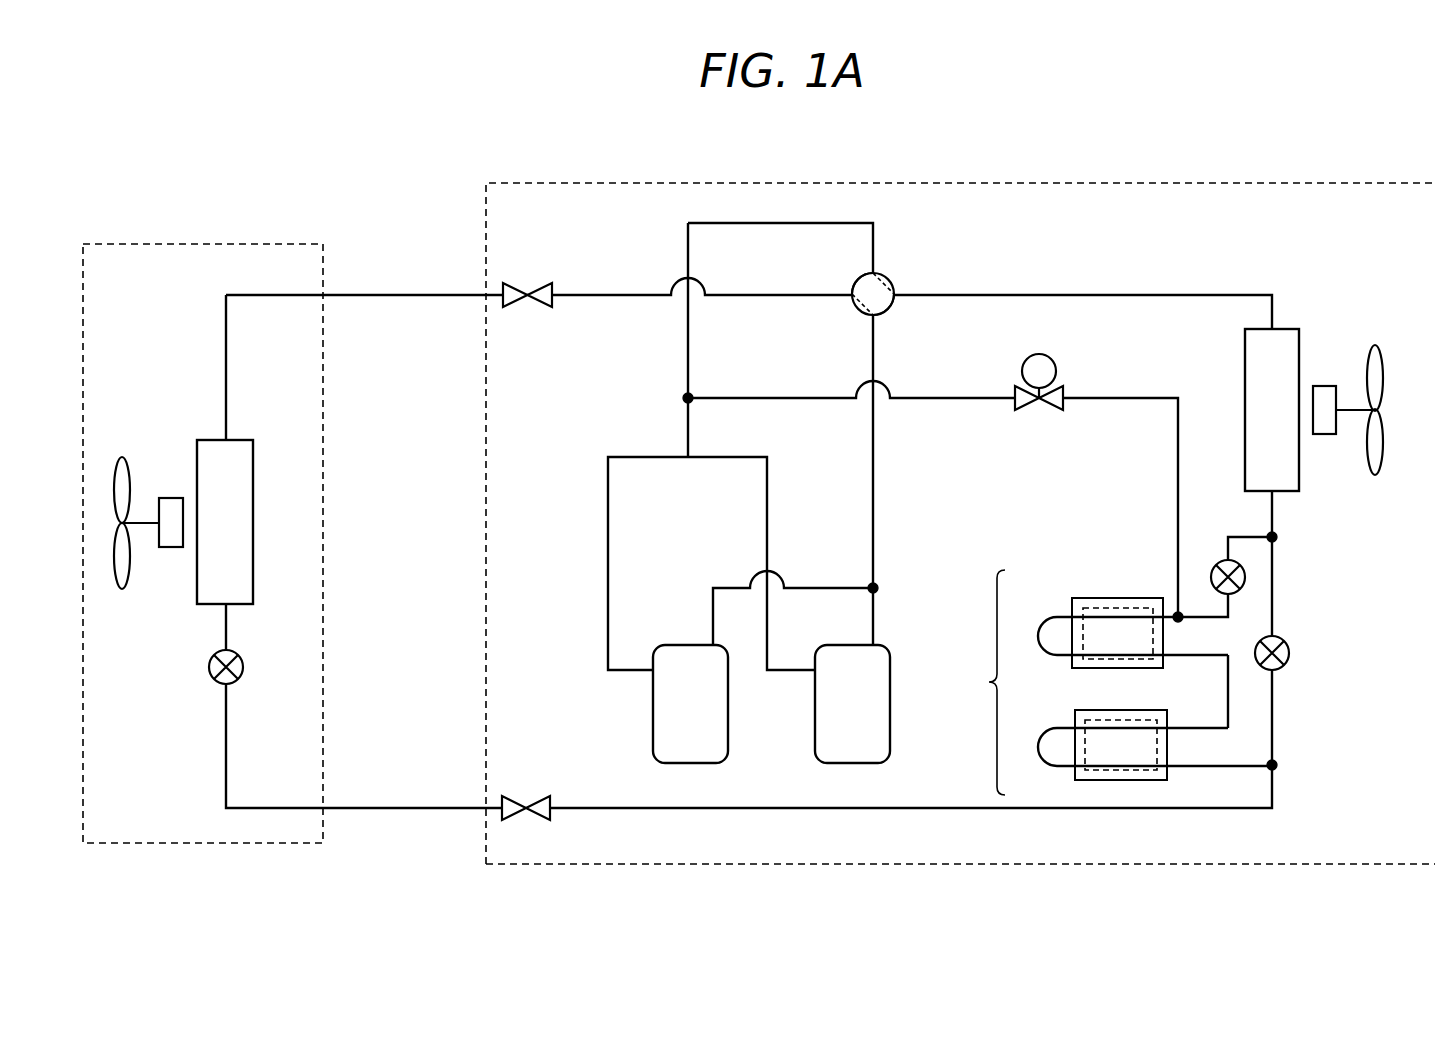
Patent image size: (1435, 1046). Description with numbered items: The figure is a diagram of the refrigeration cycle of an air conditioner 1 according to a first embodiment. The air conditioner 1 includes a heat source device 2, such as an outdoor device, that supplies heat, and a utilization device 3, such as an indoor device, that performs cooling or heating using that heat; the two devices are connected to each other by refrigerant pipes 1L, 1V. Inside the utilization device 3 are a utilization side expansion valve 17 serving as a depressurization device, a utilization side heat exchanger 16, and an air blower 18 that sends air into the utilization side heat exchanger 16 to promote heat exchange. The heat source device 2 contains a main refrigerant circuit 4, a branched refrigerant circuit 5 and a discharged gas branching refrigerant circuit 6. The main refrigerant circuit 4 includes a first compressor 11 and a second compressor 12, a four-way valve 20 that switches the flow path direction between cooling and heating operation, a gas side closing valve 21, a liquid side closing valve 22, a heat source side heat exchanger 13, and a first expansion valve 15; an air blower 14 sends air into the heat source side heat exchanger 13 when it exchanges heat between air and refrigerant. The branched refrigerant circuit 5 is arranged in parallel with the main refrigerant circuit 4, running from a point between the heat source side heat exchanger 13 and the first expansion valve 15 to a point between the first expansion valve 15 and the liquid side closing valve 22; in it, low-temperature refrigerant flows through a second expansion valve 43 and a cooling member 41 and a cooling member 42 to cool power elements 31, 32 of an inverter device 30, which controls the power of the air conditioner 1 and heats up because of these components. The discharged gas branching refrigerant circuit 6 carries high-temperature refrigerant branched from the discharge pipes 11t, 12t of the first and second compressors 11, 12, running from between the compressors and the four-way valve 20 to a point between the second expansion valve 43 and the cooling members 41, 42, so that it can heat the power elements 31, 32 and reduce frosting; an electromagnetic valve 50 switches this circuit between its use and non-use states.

The air conditioner 1 is at (378, 196).
The refrigerant pipe 1V is at (383, 295).
The refrigerant pipe 1L is at (430, 808).
The heat source device 2 is at (1087, 183).
The utilization device 3 is at (203, 244).
The main refrigerant circuit 4 is at (1272, 573).
The branched refrigerant circuit 5 is at (1228, 668).
The discharged gas branching refrigerant circuit 6 is at (930, 398).
The first compressor 11 is at (653, 733).
The second compressor 12 is at (815, 733).
The discharge pipe 11t is at (608, 503).
The discharge pipe 12t is at (767, 503).
The heat source side heat exchanger 13 is at (1292, 329).
The air blower 14 is at (1375, 345).
The first expansion valve 15 is at (1290, 648).
The utilization side heat exchanger 16 is at (243, 440).
The utilization side expansion valve 17 is at (243, 667).
The air blower 18 is at (122, 457).
The four-way valve 20 is at (889, 280).
The gas side closing valve 21 is at (513, 283).
The liquid side closing valve 22 is at (513, 796).
The inverter device 30 is at (979, 682).
The power element 31 is at (1077, 643).
The power element 32 is at (1077, 757).
The cooling member 41 is at (1072, 607).
The cooling member 42 is at (1075, 719).
The second expansion valve 43 is at (1228, 560).
The electromagnetic valve 50 is at (1057, 371).